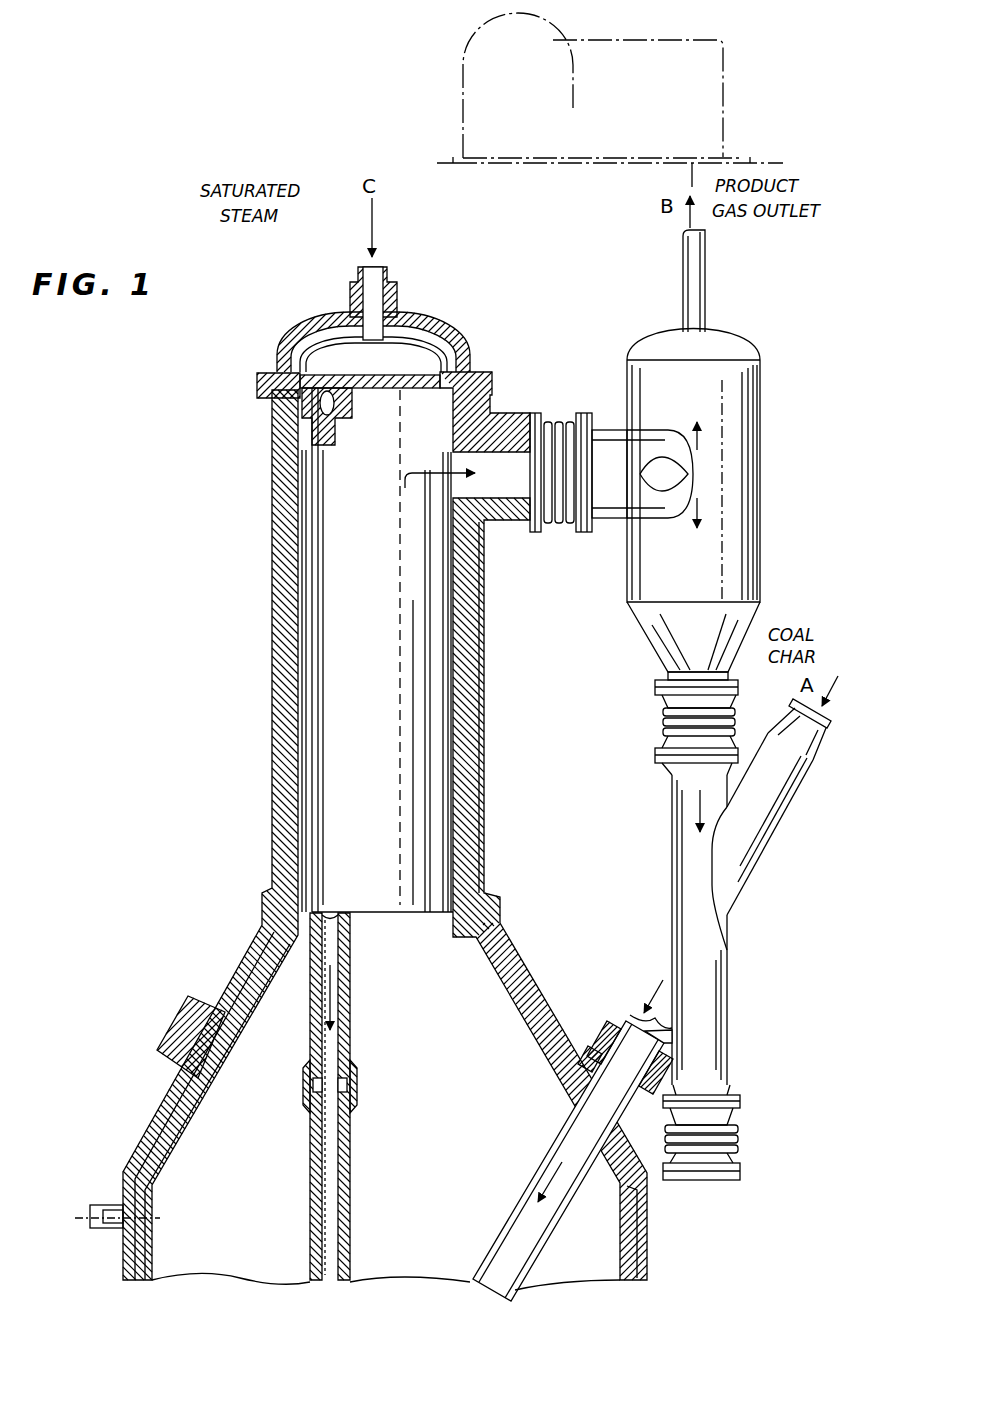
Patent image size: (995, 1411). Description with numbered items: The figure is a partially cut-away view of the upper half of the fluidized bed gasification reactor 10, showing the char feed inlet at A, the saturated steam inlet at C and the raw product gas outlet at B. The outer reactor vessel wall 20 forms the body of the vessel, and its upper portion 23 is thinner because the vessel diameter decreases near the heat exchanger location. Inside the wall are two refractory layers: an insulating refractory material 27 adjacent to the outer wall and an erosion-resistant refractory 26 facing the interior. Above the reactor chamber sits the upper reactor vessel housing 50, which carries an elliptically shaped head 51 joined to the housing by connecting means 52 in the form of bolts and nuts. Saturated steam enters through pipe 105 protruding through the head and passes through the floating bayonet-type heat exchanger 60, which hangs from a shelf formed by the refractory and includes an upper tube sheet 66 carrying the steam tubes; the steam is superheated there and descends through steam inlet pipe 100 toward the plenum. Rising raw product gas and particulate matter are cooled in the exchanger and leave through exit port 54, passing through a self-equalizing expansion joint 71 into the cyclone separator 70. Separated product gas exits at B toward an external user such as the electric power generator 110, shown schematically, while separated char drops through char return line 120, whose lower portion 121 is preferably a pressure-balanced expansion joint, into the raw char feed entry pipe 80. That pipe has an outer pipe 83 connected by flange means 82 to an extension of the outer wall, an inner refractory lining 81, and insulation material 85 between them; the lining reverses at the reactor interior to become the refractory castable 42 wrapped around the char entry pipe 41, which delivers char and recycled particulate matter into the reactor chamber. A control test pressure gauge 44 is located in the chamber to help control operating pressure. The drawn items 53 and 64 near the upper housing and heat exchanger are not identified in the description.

The fluidized bed gasification reactor 10 is at (268, 679).
The outer reactor vessel wall 20 is at (640, 1247).
The upper portion of outer wall 23 is at (275, 605).
The erosion-resistant refractory 26 is at (262, 937).
The insulating refractory material 27 is at (233, 990).
The char entry pipe 41 is at (537, 1180).
The refractory castable 42 is at (510, 1213).
The control test pressure gauge 44 is at (102, 1207).
The upper reactor vessel housing 50 is at (268, 492).
The elliptically shaped head 51 is at (440, 320).
The connecting means 52 is at (495, 380).
The vessel wall near outlet nozzle 53 is at (482, 620).
The exit port 54 is at (502, 485).
The floating bayonet-type heat exchanger 60 is at (403, 390).
The bolt / fastener 64 is at (320, 398).
The upper tube sheet 66 is at (330, 375).
The cyclone separator 70 is at (752, 348).
The self-equalizing expansion joint 71 is at (557, 427).
The raw char feed entry pipe 80 is at (777, 797).
The inner refractory lining 81 is at (647, 1052).
The flange means 82 is at (643, 1080).
The outer pipe 83 is at (598, 1030).
The insulation material 85 is at (610, 1020).
The steam inlet pipe 100 is at (352, 1025).
The saturated steam pipe 105 is at (390, 292).
The electric power generator 110 is at (652, 38).
The char return line 120 is at (668, 807).
The lower portion of return char line 121 is at (740, 1105).